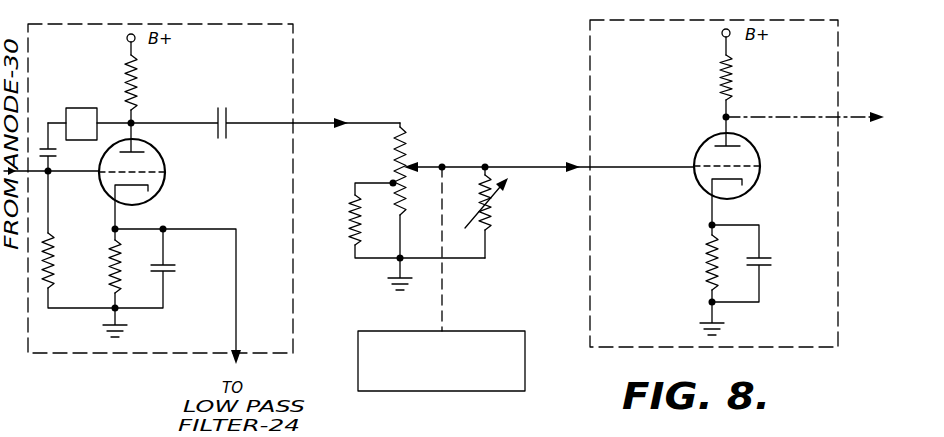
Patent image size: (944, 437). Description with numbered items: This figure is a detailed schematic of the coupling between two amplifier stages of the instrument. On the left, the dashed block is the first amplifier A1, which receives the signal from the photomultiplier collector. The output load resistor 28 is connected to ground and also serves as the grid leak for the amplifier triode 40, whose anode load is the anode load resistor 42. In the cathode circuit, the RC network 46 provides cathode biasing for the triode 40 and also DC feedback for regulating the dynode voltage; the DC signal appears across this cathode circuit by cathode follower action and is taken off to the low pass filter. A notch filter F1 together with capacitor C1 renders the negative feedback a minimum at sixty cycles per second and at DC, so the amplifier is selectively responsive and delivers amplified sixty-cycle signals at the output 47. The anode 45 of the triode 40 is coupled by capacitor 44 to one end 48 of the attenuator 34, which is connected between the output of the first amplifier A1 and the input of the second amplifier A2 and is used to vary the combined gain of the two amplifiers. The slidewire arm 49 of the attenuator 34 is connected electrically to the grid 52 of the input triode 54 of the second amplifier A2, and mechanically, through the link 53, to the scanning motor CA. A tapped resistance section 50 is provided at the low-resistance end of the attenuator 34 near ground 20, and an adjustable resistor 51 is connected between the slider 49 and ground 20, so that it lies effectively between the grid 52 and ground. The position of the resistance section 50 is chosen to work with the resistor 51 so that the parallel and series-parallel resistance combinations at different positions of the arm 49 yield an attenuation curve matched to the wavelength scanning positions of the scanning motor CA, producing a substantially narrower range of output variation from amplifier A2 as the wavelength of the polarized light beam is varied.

The ground 20 is at (390, 278).
The output load resistor 28 is at (52, 260).
The attenuator 34 is at (358, 172).
The amplifier triode 40 is at (153, 176).
The anode load resistor 42 is at (134, 92).
The capacitor 44 is at (228, 116).
The anode 45 is at (148, 153).
The RC network 46 is at (139, 282).
The output 47 is at (293, 123).
The end of attenuator 48 is at (402, 123).
The slidewire arm 49 is at (444, 165).
The tapped resistance section 50 is at (343, 236).
The adjustable resistor 51 is at (489, 216).
The grid 52 is at (722, 166).
The link 53 is at (444, 288).
The input triode 54 is at (727, 171).
The first amplifier A1 is at (295, 80).
The second amplifier A2 is at (590, 63).
The capacitor C1 is at (42, 147).
The notch filter F1 is at (89, 124).
The scanning motor CA is at (462, 355).